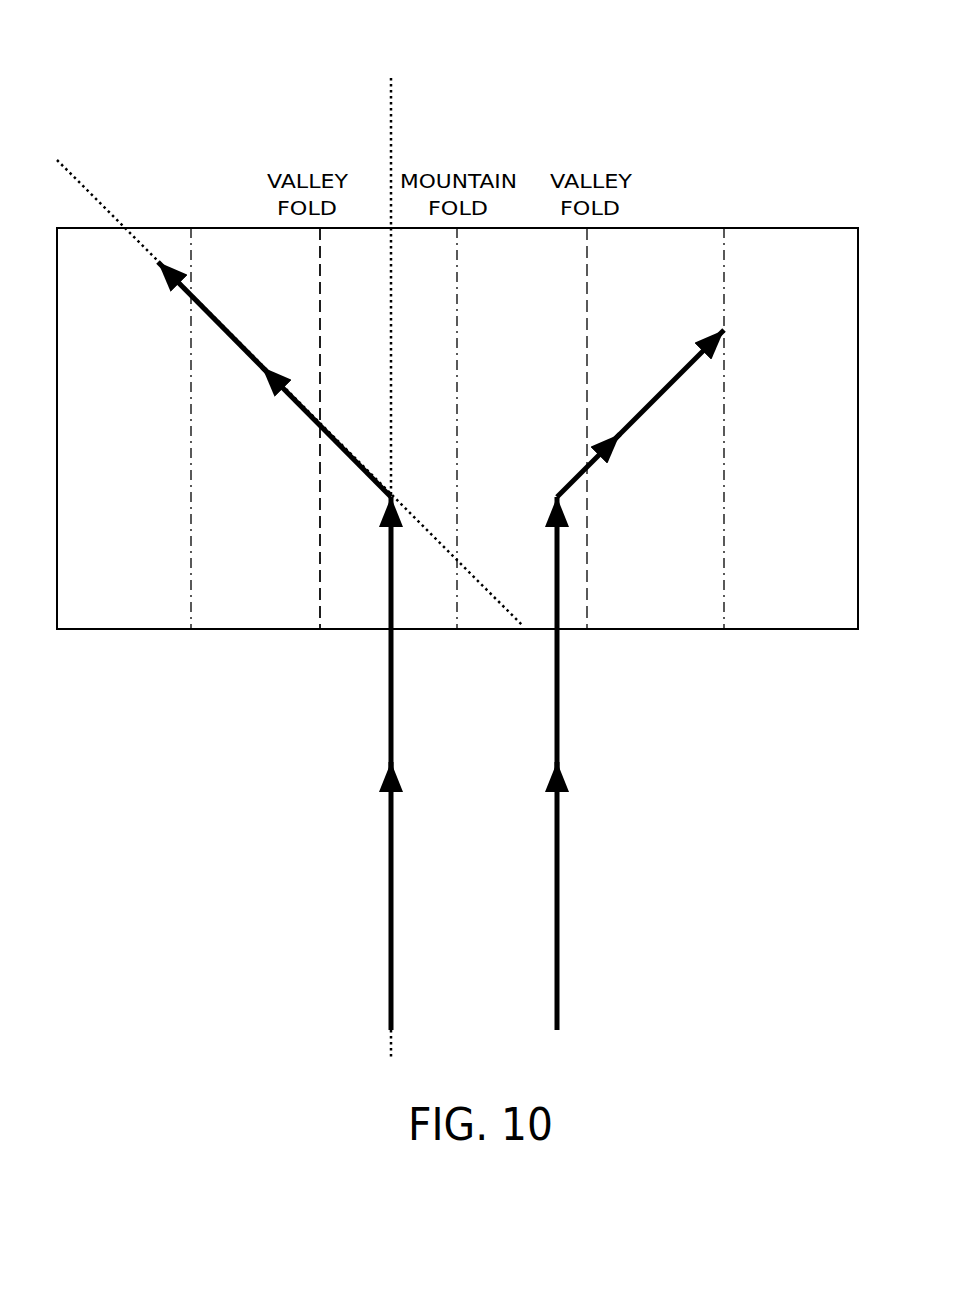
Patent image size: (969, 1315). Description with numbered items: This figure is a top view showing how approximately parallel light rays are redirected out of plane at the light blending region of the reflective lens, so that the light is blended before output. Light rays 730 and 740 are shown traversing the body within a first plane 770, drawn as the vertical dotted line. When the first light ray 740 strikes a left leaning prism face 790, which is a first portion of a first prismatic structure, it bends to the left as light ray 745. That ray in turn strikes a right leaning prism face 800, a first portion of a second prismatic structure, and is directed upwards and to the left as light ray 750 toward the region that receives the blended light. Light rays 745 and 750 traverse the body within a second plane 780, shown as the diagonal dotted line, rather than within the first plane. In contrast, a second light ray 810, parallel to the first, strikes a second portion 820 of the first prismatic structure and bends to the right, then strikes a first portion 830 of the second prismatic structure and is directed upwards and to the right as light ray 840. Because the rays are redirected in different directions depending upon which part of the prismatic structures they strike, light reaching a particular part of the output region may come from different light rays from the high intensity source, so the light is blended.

The light ray 730 is at (388, 870).
The first light ray 740 is at (387, 718).
The light ray 745 is at (315, 425).
The light ray 750 is at (180, 290).
The first plane 770 is at (392, 128).
The second plane 780 is at (108, 212).
The left leaning prism face 790 is at (357, 615).
The right leaning prism face 800 is at (225, 615).
The second light ray 810 is at (557, 720).
The second portion of first prismatic structure 820 is at (542, 622).
The first portion of second prismatic structure 830 is at (700, 622).
The light ray 840 is at (700, 335).